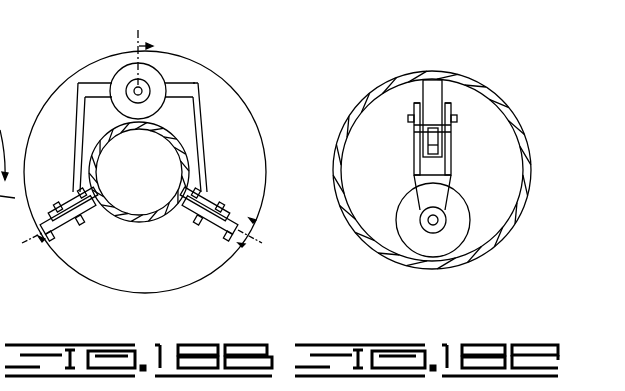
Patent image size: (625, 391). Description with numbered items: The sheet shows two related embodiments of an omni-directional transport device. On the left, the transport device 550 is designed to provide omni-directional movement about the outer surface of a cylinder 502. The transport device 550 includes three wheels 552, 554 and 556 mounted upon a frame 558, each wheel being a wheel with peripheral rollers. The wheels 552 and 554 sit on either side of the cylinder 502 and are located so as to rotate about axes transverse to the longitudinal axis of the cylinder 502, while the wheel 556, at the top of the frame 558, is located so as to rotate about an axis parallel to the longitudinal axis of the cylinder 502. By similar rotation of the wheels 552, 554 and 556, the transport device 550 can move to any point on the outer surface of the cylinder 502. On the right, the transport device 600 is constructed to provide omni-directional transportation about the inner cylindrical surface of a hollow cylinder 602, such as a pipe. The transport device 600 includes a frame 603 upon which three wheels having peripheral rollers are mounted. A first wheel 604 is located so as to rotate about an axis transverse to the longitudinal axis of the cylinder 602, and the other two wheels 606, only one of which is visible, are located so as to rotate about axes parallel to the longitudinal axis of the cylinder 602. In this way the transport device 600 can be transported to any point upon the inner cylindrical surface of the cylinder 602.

In FIG. 13B, the cylinder 502 is at (138, 223).
In FIG. 13B, the transport device 550 is at (233, 75).
In FIG. 13B, the wheel 552 is at (55, 232).
In FIG. 13B, the wheel 554 is at (213, 215).
In FIG. 13B, the wheel 556 is at (153, 63).
In FIG. 13B, the frame 558 is at (205, 138).
In FIG. 13C, the transport device 600 is at (468, 120).
In FIG. 13C, the hollow cylinder 602 is at (516, 198).
In FIG. 13C, the frame 603 is at (451, 138).
In FIG. 13C, the first wheel 604 is at (420, 142).
In FIG. 13C, the wheels 606 is at (398, 200).